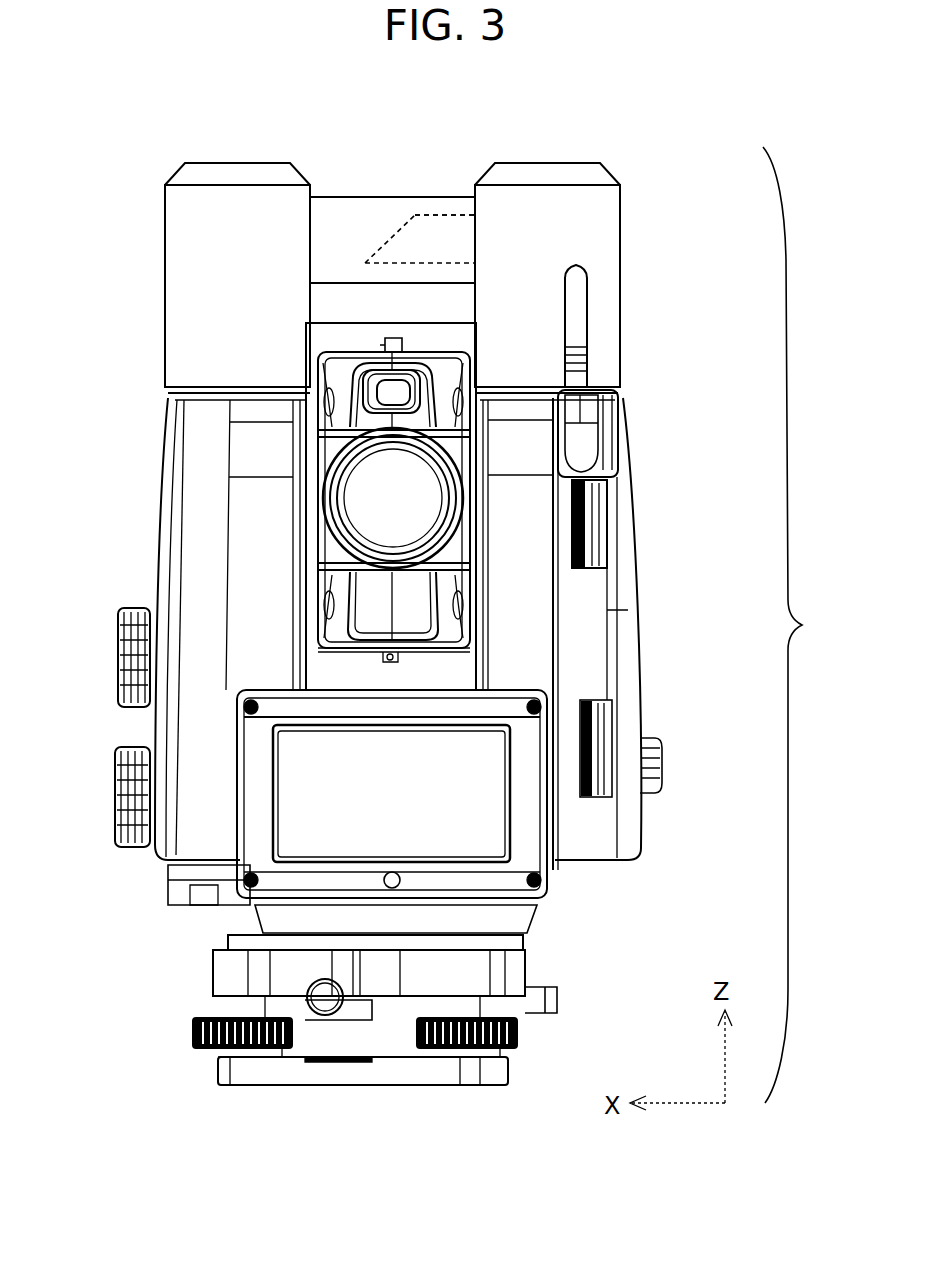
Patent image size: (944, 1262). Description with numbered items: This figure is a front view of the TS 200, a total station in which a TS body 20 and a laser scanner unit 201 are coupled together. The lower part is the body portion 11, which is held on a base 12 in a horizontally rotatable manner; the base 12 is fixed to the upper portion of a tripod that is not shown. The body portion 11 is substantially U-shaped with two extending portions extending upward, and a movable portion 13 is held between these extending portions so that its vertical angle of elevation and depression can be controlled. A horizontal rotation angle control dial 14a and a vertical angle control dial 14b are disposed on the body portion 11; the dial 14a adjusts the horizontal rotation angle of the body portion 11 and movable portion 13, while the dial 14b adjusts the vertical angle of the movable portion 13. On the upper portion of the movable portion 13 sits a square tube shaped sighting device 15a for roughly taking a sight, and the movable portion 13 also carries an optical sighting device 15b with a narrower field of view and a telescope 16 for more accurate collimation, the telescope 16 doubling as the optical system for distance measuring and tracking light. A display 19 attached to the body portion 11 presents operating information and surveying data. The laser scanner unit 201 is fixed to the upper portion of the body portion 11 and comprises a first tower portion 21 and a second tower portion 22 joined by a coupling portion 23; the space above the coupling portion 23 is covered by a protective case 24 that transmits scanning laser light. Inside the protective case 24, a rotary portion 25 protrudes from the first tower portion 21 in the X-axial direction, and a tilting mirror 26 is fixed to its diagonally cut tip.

The TS 200 is at (811, 625).
The laser scanner unit 201 is at (343, 242).
The body portion 11 is at (194, 512).
The base 12 is at (240, 974).
The movable portion 13 is at (417, 613).
The horizontal rotation angle control dial 14a is at (118, 631).
The vertical angle control dial 14b is at (116, 772).
The sighting device 15a is at (385, 350).
The optical sighting device 15b is at (433, 363).
The telescope 16 is at (417, 490).
The display 19 is at (478, 842).
The TS body 20 is at (636, 541).
The first tower portion 21 is at (548, 215).
The second tower portion 22 is at (200, 203).
The coupling portion 23 is at (333, 300).
The protective case 24 is at (333, 195).
The rotary portion 25 is at (452, 232).
The tilting mirror 26 is at (395, 233).